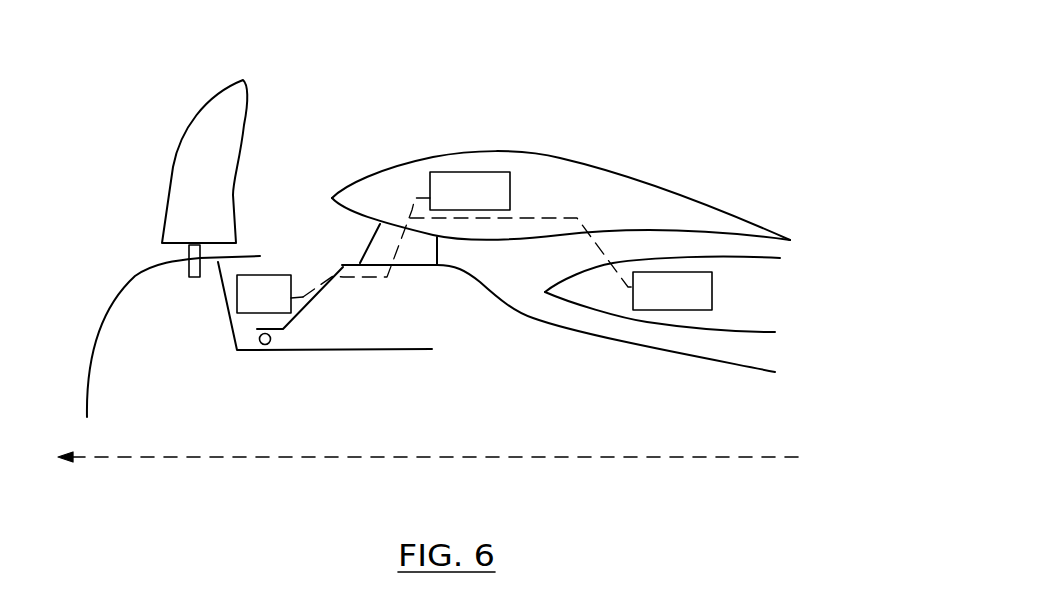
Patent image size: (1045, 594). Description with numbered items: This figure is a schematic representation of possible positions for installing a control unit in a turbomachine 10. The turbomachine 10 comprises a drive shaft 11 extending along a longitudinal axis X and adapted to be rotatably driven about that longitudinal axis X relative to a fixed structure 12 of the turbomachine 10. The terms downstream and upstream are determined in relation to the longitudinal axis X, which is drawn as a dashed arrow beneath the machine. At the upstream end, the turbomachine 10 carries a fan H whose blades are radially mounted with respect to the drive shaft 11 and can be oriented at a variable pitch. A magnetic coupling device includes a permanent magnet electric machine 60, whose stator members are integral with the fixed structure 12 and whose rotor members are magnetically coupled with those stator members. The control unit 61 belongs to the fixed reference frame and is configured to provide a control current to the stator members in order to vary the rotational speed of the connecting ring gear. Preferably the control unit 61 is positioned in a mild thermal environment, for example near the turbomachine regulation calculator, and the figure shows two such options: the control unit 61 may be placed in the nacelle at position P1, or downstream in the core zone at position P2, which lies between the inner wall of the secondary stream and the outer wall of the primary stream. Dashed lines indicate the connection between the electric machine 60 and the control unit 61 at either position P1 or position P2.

The turbomachine 10 is at (117, 207).
The drive shaft 11 is at (328, 352).
The fixed structure 12 is at (342, 265).
The permanent magnet electric machine 60 is at (435, 255).
The control unit 61 is at (571, 241).
The fan H is at (203, 145).
The position in the nacelle P1 is at (475, 172).
The position in the core zone P2 is at (691, 271).
The longitudinal axis X is at (451, 457).